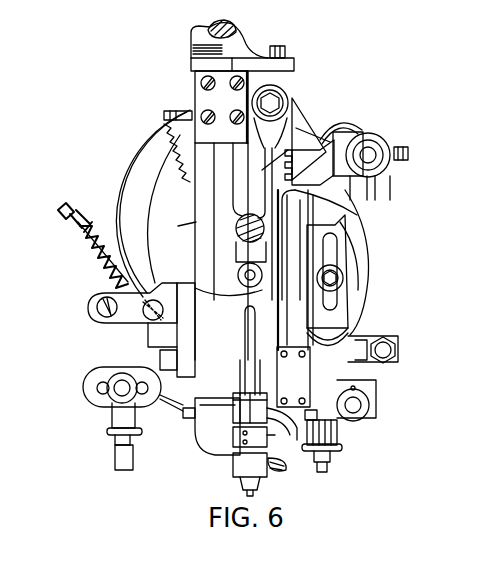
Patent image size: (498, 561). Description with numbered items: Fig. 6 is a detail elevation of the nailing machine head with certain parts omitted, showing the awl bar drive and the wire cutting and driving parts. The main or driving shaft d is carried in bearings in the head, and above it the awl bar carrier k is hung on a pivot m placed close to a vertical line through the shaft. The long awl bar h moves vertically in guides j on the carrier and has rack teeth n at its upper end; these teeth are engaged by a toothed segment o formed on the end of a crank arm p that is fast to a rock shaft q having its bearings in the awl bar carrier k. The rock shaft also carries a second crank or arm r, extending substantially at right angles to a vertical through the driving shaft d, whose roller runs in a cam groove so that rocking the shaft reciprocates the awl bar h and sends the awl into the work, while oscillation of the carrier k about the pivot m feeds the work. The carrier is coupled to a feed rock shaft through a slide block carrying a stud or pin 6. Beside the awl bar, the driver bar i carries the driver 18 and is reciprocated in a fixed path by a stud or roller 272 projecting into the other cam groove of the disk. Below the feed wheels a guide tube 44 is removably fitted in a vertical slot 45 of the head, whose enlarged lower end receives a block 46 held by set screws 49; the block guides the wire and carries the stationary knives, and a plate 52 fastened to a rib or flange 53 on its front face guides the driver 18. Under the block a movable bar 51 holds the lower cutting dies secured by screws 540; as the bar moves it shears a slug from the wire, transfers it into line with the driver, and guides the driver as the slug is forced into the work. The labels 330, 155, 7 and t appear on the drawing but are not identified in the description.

The bolt 330 is at (168, 120).
The gear segment 155 is at (138, 176).
The driver bar i is at (182, 227).
The main or driving shaft d is at (240, 236).
The stud or roller 272 is at (251, 253).
The guides j is at (258, 284).
The rack teeth n is at (268, 166).
The pivot m is at (276, 98).
The awl bar carrier k is at (302, 118).
The toothed segment o is at (309, 162).
The crank arm p is at (326, 197).
The awl bar h is at (288, 220).
The second crank or arm r is at (346, 134).
The rock shaft q is at (370, 153).
The slot 7 is at (336, 242).
The stud or pin 6 is at (342, 276).
The vertical slot 45 is at (238, 286).
The guide tube 44 is at (252, 322).
The driver 18 is at (252, 382).
The block 46 is at (243, 401).
The plate 52 is at (217, 426).
The rib or flange 53 is at (240, 432).
The movable bar 51 is at (236, 442).
The screws 540 is at (242, 458).
The thumb screw t is at (283, 465).
The set screws 49 is at (187, 418).